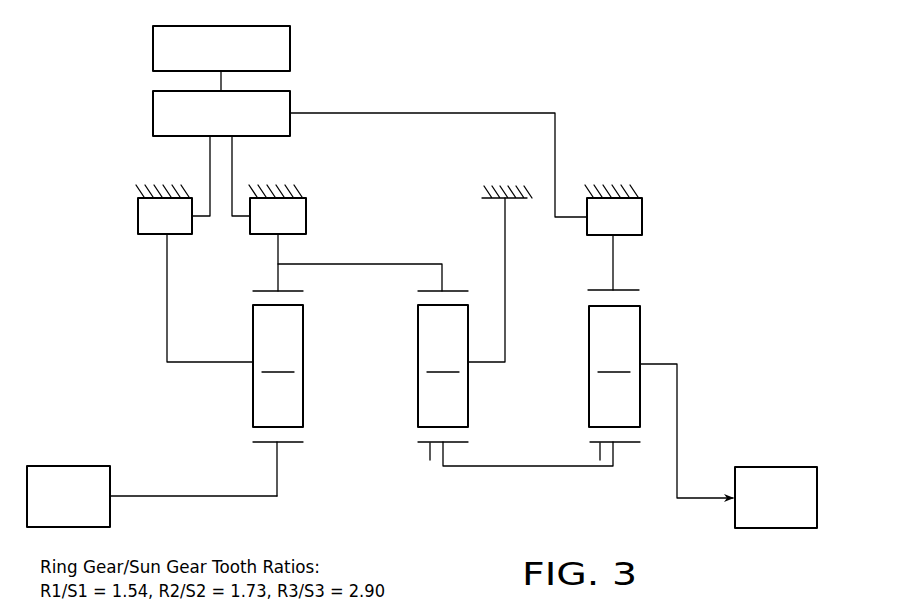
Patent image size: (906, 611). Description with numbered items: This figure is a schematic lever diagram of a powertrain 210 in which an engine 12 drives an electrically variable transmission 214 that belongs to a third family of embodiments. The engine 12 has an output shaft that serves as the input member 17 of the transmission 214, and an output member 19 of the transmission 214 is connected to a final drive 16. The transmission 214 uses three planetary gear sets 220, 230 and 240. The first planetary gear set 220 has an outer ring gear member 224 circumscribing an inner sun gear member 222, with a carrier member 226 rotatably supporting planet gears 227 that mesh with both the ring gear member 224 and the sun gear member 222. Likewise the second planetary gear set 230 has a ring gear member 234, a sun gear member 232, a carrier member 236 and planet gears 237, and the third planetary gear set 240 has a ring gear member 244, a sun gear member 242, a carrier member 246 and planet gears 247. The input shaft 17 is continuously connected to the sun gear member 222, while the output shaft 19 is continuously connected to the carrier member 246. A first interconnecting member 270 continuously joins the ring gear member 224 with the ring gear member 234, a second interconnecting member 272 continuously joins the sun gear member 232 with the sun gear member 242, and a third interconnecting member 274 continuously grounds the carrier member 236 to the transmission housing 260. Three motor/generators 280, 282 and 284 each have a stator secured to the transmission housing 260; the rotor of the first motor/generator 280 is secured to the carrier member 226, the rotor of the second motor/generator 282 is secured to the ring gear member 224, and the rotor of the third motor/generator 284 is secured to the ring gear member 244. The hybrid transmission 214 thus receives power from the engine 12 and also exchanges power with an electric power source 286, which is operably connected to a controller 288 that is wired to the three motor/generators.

The engine 12 is at (80, 452).
The final drive 16 is at (752, 444).
The input member 17 is at (132, 498).
The output member 19 is at (712, 500).
The powertrain 210 is at (714, 100).
The electrically variable transmission 214 is at (752, 138).
The first planetary gear set 220 is at (289, 446).
The sun gear member 222 is at (263, 443).
The ring gear member 224 is at (266, 289).
The carrier member 226 is at (246, 370).
The planet gears 227 is at (235, 330).
The second planetary gear set 230 is at (453, 446).
The sun gear member 232 is at (430, 445).
The ring gear member 234 is at (429, 289).
The carrier member 236 is at (475, 372).
The planet gears 237 is at (443, 366).
The third planetary gear set 240 is at (625, 446).
The sun gear member 242 is at (600, 445).
The ring gear member 244 is at (627, 288).
The carrier member 246 is at (647, 358).
The planet gears 247 is at (614, 366).
The transmission housing 260 is at (168, 186).
The first interconnecting member 270 is at (378, 262).
The second interconnecting member 272 is at (538, 468).
The third interconnecting member 274 is at (506, 261).
The first motor/generator 280 is at (132, 200).
The second motor/generator 282 is at (312, 204).
The third motor/generator 284 is at (648, 204).
The electric power source 286 is at (153, 52).
The controller 288 is at (153, 108).